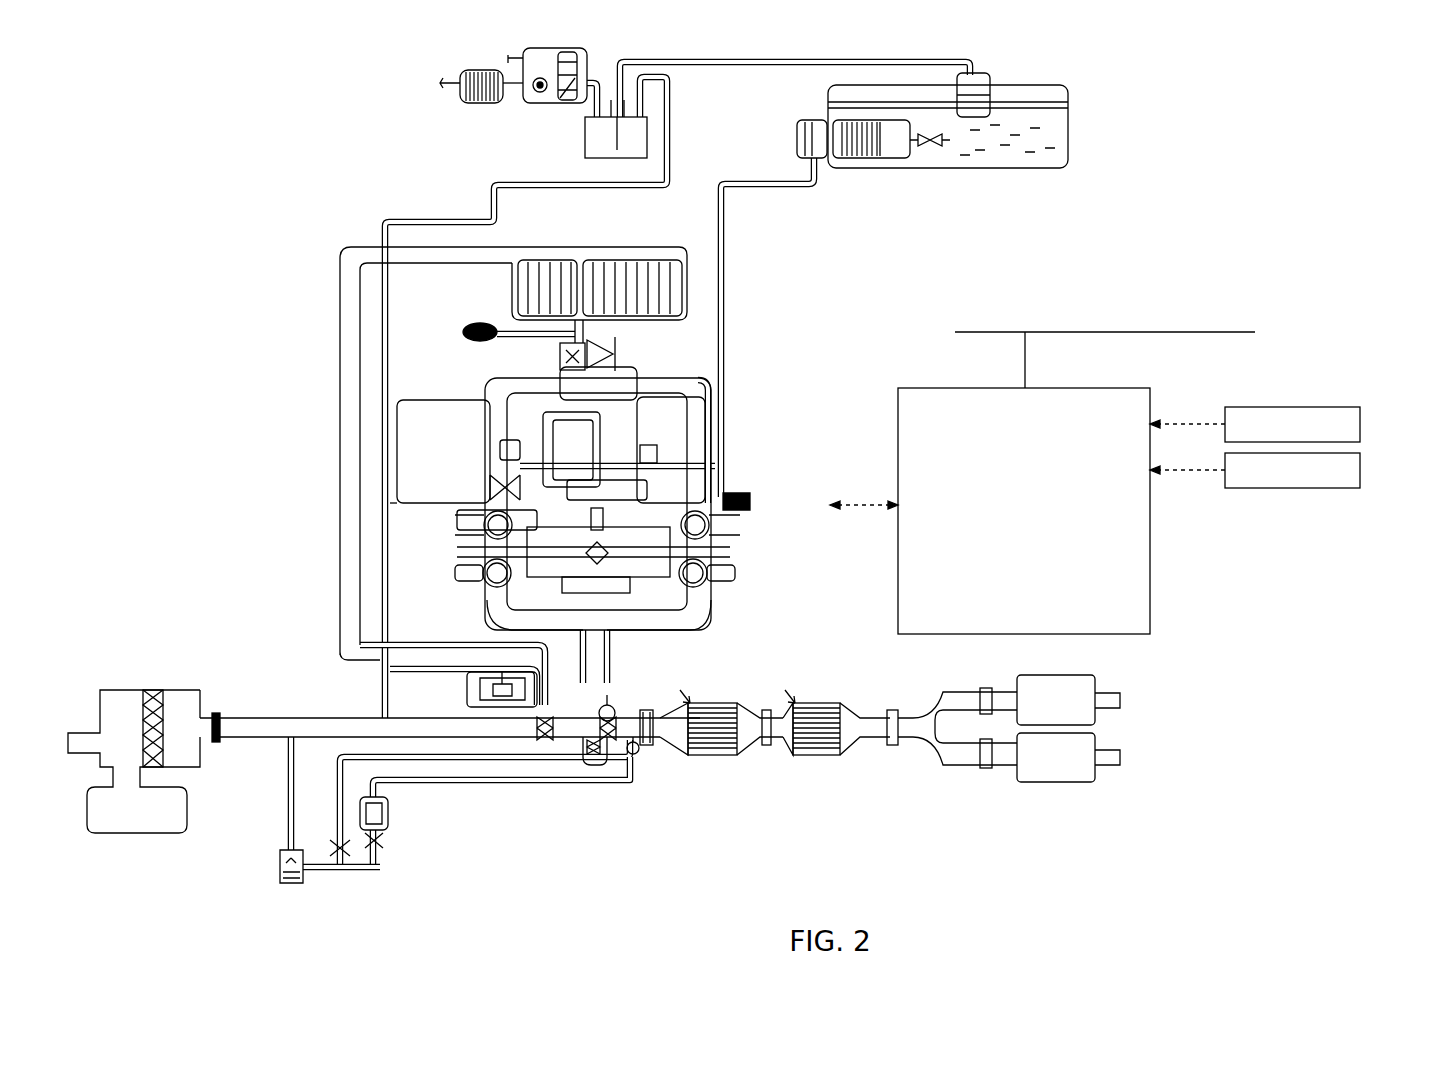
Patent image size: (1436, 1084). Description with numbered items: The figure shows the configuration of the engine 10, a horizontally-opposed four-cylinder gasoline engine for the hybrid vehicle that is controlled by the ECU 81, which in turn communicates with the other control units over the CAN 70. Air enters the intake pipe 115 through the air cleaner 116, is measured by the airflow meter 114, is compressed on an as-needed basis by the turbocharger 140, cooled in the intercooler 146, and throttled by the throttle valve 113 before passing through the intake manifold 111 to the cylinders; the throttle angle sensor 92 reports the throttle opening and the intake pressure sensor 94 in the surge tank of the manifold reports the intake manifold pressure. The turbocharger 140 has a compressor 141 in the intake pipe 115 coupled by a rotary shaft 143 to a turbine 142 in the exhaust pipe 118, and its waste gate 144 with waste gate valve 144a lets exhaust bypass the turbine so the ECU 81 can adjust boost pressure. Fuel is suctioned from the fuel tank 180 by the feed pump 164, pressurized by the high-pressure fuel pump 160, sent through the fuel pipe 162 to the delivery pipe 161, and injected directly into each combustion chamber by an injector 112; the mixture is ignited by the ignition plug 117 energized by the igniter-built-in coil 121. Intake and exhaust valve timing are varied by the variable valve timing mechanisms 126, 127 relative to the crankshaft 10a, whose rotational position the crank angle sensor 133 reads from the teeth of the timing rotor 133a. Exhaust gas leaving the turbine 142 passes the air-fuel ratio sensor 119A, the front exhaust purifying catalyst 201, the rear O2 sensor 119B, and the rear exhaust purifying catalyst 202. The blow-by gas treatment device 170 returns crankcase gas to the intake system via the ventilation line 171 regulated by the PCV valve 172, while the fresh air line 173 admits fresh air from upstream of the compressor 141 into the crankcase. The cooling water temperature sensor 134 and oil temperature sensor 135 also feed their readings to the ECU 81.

The engine 10 is at (752, 435).
The crankshaft 10a is at (555, 572).
The controller area network 70 is at (1120, 332).
The engine control unit 81 is at (1158, 605).
The throttle angle sensor 92 is at (618, 352).
The intake pressure sensor 94 is at (569, 380).
The intake manifold 111 is at (497, 430).
The injector 112 is at (495, 505).
The throttle valve 113 is at (614, 376).
The airflow meter 114 is at (217, 713).
The intake pipe 115 is at (338, 400).
The air cleaner 116 is at (152, 690).
The ignition plug 117 is at (588, 562).
The exhaust pipe 118 is at (492, 613).
The air-fuel ratio sensor 119A is at (692, 703).
The rear O2 sensor 119B is at (796, 703).
The igniter-built-in coil 121 is at (478, 556).
The variable valve timing mechanism 126 is at (476, 528).
The variable valve timing mechanism 127 is at (476, 585).
The crank angle sensor 133 is at (598, 505).
The timing rotor 133a is at (630, 578).
The cooling water temperature sensor 134 is at (1360, 424).
The oil temperature sensor 135 is at (1360, 470).
The turbocharger 140 is at (595, 784).
The compressor 141 is at (543, 735).
The turbine 142 is at (606, 742).
The rotary shaft 143 is at (592, 757).
The waste gate 144 is at (613, 698).
The waste gate valve 144a is at (634, 754).
The intercooler 146 is at (614, 247).
The high-pressure fuel pump 160 is at (750, 500).
The delivery pipe 161 is at (652, 447).
The fuel pipe 162 is at (715, 468).
The feed pump 164 is at (797, 145).
The blow-by gas treatment device 170 is at (410, 440).
The ventilation line 171 is at (512, 450).
The PCV valve 172 is at (500, 480).
The fresh air line 173 is at (383, 546).
The fuel tank 180 is at (988, 168).
The front exhaust purifying catalyst 201 is at (718, 755).
The rear exhaust purifying catalyst 202 is at (818, 755).